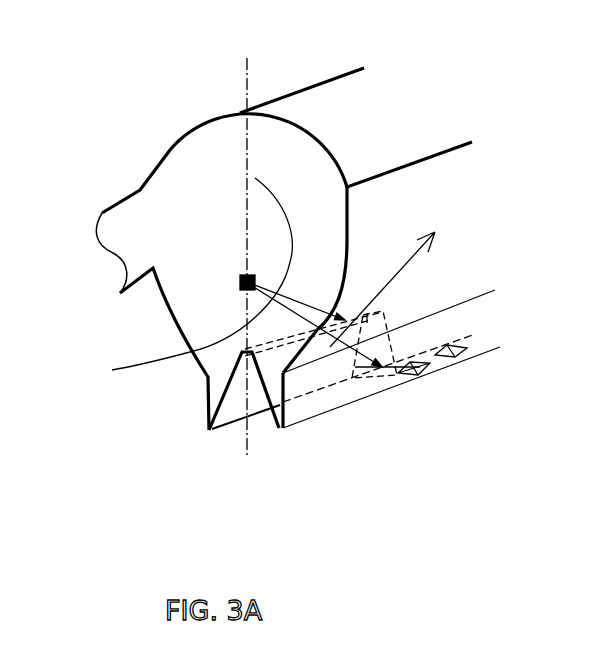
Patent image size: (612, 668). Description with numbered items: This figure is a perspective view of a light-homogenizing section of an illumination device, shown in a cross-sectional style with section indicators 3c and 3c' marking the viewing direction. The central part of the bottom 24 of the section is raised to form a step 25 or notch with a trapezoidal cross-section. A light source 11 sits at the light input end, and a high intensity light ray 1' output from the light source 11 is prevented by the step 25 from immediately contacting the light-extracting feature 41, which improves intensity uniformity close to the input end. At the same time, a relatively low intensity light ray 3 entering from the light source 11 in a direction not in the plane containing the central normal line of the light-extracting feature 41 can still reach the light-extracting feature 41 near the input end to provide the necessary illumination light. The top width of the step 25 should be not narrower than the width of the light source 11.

The high intensity light ray 1' is at (190, 214).
The light source 11 is at (242, 276).
The low intensity light ray 3 is at (112, 370).
The step 25 is at (270, 380).
The bottom 24 is at (349, 405).
The light-extracting feature 41 is at (428, 383).
The section view direction 3c is at (204, 32).
The section view direction 3c' is at (197, 445).